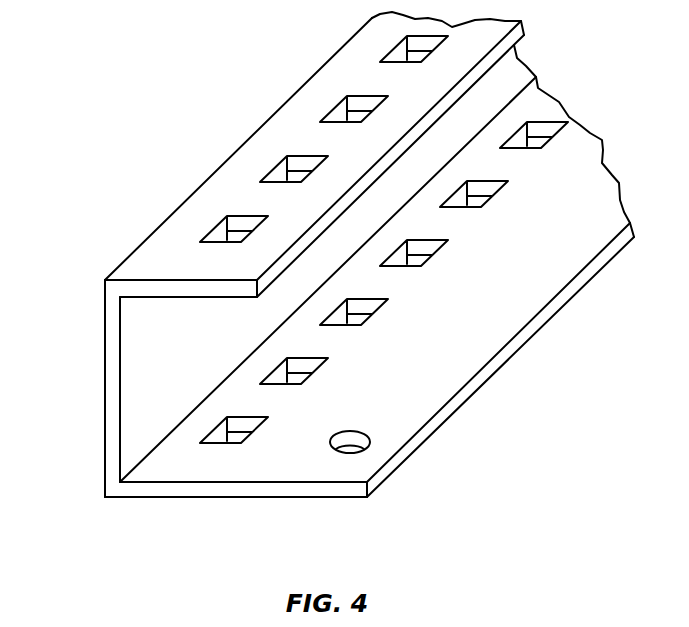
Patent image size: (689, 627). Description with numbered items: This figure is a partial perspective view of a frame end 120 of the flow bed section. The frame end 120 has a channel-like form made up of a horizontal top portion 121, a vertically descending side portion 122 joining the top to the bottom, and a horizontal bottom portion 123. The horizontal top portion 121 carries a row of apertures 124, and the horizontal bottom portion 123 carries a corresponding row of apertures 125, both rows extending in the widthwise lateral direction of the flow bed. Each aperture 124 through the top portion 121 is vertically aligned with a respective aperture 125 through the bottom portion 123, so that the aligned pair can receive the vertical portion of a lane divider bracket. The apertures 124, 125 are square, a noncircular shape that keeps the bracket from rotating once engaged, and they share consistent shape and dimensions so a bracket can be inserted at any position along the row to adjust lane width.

The frame end 120 is at (323, 284).
The horizontal top portion 121 is at (293, 154).
The vertically descending side portion 122 is at (105, 447).
The horizontal bottom portion 123 is at (369, 334).
The apertures 124 is at (327, 105).
The apertures 125 is at (363, 315).